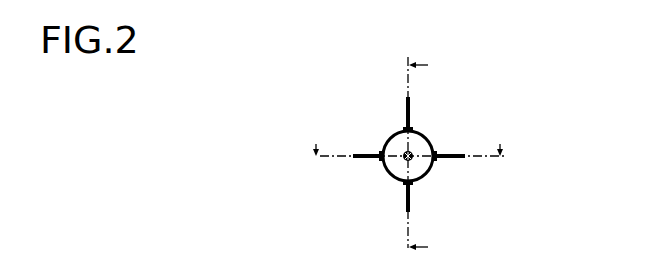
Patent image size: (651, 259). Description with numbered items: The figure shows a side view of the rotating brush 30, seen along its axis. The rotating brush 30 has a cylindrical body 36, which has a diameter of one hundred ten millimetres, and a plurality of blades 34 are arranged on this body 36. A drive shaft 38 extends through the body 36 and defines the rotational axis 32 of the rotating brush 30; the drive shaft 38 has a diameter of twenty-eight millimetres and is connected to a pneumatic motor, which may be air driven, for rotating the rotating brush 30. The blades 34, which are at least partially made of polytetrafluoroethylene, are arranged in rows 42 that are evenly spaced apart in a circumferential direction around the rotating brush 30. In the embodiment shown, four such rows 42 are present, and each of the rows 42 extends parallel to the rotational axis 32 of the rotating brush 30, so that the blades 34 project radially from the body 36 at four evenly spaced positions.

The rotating brush 30 is at (460, 111).
The rotational axis 32 is at (405, 159).
The blades 34 is at (356, 157).
The cylindrical body 36 is at (393, 139).
The drive shaft 38 is at (413, 160).
The rows 42 is at (406, 118).